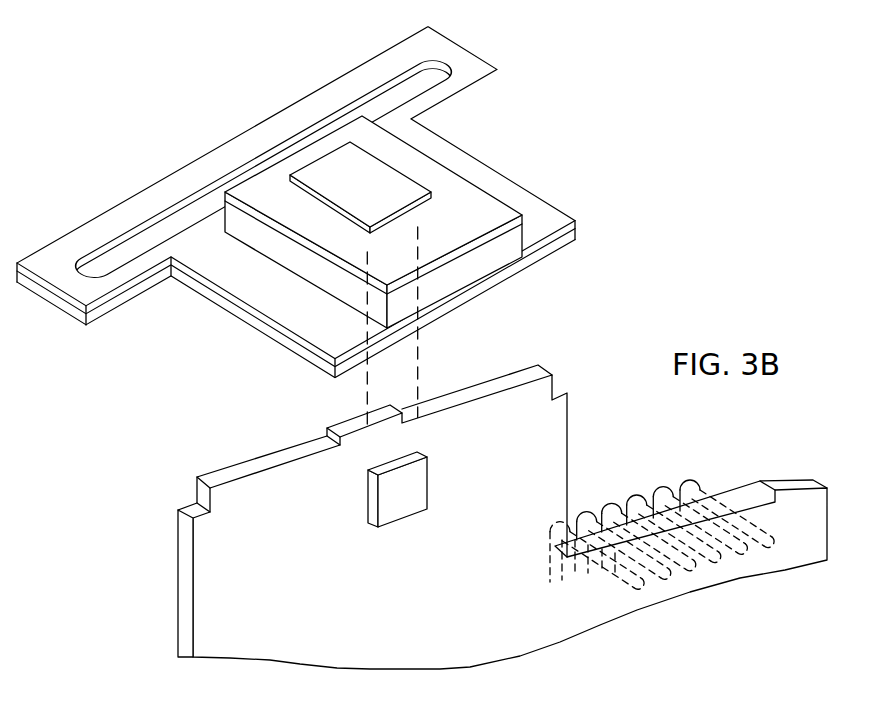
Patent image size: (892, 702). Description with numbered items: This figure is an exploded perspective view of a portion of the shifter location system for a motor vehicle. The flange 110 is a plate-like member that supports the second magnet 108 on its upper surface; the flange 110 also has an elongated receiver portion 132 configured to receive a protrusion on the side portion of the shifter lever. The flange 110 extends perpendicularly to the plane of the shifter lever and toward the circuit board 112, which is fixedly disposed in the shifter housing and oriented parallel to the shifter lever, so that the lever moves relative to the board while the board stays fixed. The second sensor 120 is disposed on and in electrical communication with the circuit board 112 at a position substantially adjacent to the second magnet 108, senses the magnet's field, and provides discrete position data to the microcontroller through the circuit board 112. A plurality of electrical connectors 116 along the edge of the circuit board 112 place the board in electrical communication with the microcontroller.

The second magnet 108 is at (329, 176).
The flange 110 is at (339, 227).
The receiver portion 132 is at (117, 257).
The circuit board 112 is at (829, 510).
The electrical connectors 116 is at (642, 503).
The second sensor 120 is at (400, 503).